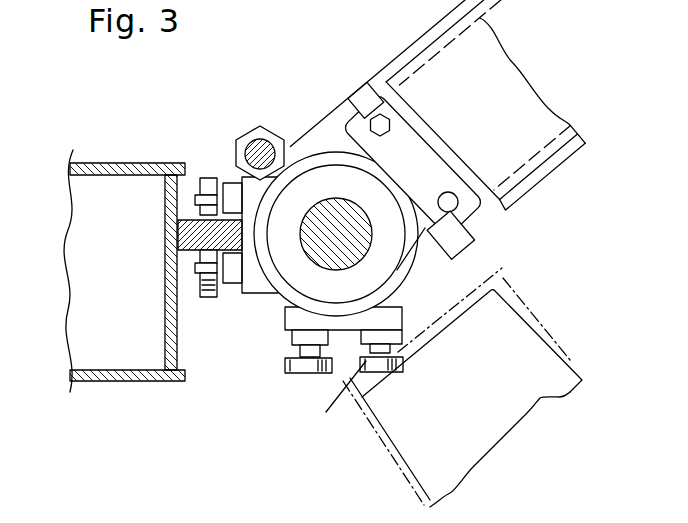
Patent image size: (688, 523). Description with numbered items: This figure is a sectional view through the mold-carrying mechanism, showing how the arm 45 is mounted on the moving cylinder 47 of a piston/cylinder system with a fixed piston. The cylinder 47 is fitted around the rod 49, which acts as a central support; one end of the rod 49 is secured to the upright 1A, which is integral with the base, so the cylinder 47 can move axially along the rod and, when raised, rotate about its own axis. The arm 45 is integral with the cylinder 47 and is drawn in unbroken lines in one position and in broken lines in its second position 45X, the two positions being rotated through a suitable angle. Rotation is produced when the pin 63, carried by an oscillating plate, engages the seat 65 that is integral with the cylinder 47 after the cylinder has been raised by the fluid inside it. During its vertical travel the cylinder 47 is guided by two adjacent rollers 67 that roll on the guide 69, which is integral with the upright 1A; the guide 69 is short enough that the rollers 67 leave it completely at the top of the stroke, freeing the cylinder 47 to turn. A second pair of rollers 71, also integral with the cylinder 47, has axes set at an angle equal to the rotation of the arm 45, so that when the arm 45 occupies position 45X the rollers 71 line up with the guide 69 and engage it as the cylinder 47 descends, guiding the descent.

The upright 1A is at (112, 360).
The arm 45 is at (534, 150).
The arm position 45X is at (404, 456).
The cylinder 47 is at (303, 283).
The rod 49 is at (332, 250).
The pin 63 is at (271, 130).
The seat 65 is at (254, 131).
The rollers 67 is at (212, 178).
The guide 69 is at (190, 226).
The rollers 71 is at (316, 378).